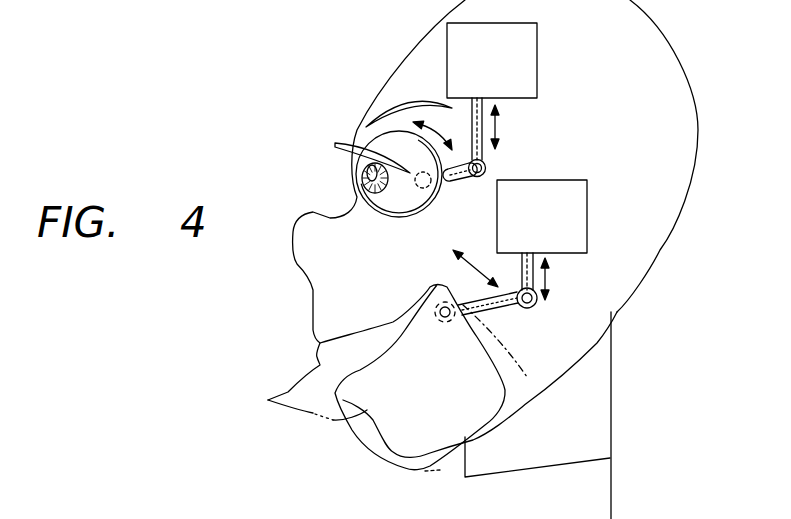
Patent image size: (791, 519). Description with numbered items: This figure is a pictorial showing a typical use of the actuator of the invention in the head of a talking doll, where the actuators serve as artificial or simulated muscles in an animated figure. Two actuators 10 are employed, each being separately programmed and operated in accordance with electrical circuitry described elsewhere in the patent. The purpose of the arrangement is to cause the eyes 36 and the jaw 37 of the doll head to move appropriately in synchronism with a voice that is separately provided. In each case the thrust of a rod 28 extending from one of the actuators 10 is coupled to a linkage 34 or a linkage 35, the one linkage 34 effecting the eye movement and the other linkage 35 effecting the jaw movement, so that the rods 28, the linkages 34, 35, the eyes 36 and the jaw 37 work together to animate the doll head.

The actuator 10 is at (517, 138).
The rod 28 is at (484, 158).
The linkage 34 is at (450, 178).
The linkage 35 is at (463, 305).
The eyes 36 is at (378, 148).
The jaw 37 is at (268, 400).